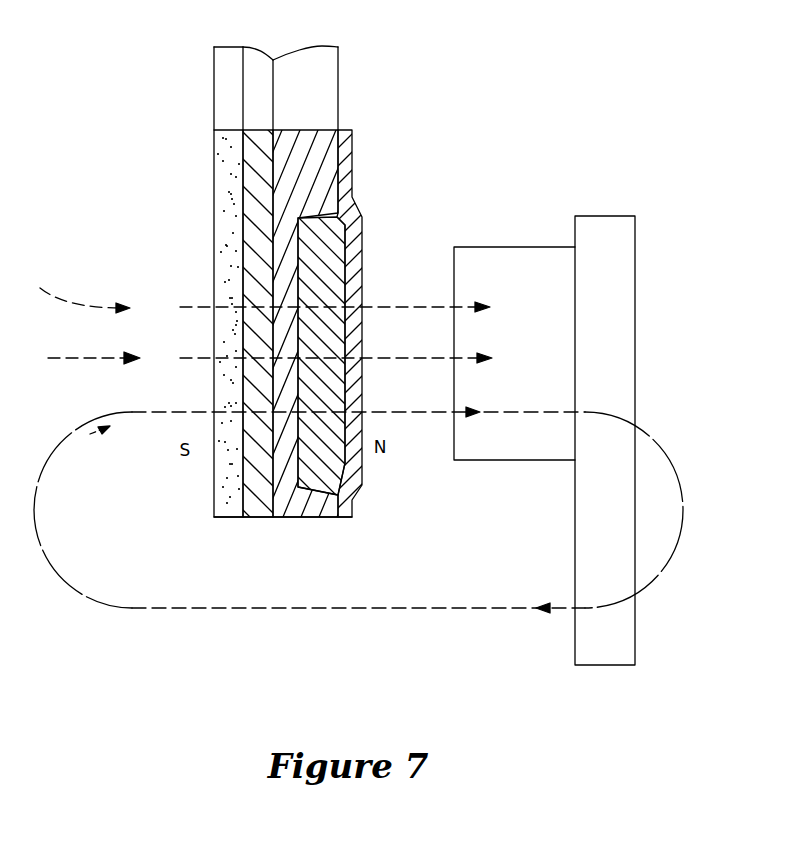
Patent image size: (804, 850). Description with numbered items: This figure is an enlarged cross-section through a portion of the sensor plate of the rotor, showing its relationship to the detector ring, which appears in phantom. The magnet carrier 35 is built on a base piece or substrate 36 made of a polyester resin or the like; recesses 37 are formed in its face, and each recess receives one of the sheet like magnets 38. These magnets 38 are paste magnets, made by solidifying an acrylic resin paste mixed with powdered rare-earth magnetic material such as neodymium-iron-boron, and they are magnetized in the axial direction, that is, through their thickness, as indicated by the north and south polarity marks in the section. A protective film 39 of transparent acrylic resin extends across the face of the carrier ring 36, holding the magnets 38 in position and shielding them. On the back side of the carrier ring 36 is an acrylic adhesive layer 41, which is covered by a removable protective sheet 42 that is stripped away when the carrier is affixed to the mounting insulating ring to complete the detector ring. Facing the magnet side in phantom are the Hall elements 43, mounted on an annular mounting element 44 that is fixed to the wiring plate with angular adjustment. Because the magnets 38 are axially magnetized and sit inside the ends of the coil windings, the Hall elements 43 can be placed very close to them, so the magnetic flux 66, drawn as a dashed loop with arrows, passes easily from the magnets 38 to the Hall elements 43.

The magnet carrier 35 is at (148, 249).
The substrate 36 is at (318, 130).
The recesses 37 is at (305, 442).
The sheet like magnets 38 is at (330, 250).
The protective film 39 is at (350, 163).
The acrylic adhesive layer 41 is at (257, 128).
The removable protective sheet 42 is at (214, 165).
The Hall elements 43 is at (550, 247).
The annular mounting element 44 is at (635, 243).
The magnetic flux 66 is at (373, 607).